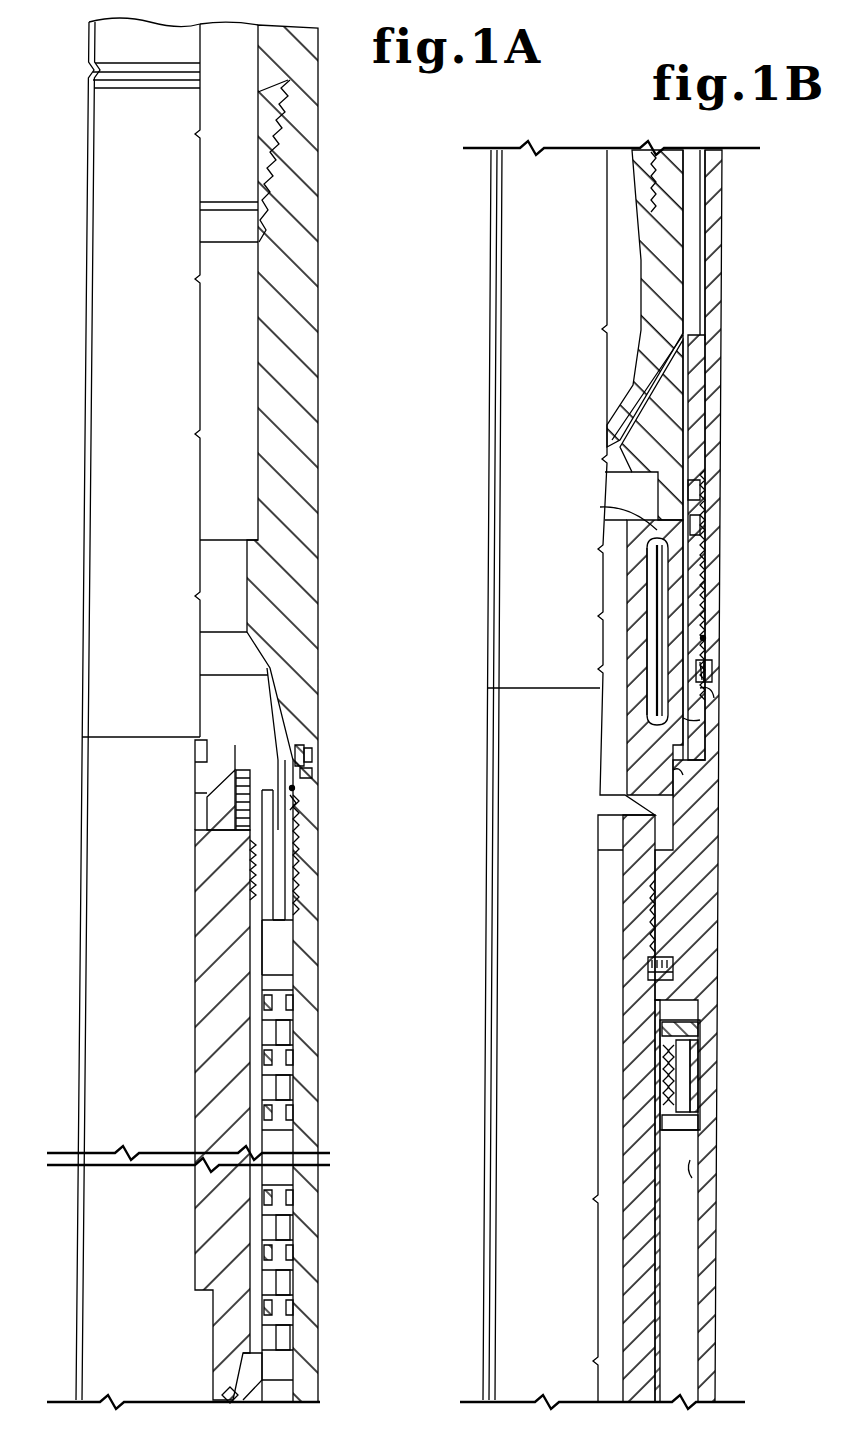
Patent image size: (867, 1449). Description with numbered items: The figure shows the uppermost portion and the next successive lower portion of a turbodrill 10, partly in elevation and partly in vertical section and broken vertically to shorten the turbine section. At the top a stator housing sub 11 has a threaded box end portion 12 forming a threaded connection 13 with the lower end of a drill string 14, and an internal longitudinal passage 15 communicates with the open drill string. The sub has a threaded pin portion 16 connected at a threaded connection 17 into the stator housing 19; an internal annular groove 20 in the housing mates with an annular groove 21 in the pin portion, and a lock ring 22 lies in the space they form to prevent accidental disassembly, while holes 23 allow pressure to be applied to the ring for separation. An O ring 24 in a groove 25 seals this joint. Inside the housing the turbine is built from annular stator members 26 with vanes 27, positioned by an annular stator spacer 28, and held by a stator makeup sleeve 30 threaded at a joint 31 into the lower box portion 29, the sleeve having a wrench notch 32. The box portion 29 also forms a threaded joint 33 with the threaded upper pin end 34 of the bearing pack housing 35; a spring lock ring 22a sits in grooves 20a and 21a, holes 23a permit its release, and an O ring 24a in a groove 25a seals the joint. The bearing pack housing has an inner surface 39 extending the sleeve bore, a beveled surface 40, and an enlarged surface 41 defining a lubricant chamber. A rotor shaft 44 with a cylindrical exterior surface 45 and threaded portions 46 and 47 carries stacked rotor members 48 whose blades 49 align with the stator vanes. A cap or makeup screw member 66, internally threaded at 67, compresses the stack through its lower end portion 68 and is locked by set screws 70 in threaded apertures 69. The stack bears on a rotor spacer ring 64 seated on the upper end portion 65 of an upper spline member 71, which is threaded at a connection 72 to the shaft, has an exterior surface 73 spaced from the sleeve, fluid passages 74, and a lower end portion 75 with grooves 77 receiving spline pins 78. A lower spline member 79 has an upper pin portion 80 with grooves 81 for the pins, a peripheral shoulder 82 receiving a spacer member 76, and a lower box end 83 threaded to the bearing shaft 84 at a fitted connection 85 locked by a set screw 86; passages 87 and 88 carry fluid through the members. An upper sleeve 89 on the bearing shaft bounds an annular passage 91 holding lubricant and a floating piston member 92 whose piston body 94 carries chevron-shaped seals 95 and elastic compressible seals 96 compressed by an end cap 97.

In FIG. 1A, the turbodrill 10 is at (70, 615).
In FIG. 1A, the stator housing sub 11 is at (105, 353).
In FIG. 1A, the threaded box end portion 12 is at (290, 106).
In FIG. 1A, the threaded connection 13 is at (280, 158).
In FIG. 1A, the drill string 14 is at (100, 40).
In FIG. 1A, the internal longitudinal passage 15 is at (258, 400).
In FIG. 1A, the threaded pin portion 16 is at (285, 848).
In FIG. 1A, the threaded connection 17 is at (300, 868).
In FIG. 1A, the stator housing 19 is at (304, 952).
In FIG. 1B, the stator housing 19 is at (710, 246).
In FIG. 1A, the internal annular groove 20 is at (312, 773).
In FIG. 1A, the annular groove 21 is at (264, 770).
In FIG. 1A, the lock ring 22 is at (300, 745).
In FIG. 1A, the holes 23 is at (312, 752).
In FIG. 1A, the O ring 24 is at (295, 788).
In FIG. 1A, the groove 25 is at (292, 806).
In FIG. 1A, the stator members 26 is at (290, 1036).
In FIG. 1A, the vanes or blades 27 is at (280, 1013).
In FIG. 1A, the annular stator spacer 28 is at (292, 978).
In FIG. 1B, the box portion 29 is at (720, 530).
In FIG. 1A, the stator makeup sleeve 30 is at (290, 1386).
In FIG. 1B, the stator makeup sleeve 30 is at (703, 322).
In FIG. 1B, the threaded joint 31 is at (710, 388).
In FIG. 1B, the notch 32 is at (700, 488).
In FIG. 1B, the threaded joint 33 is at (718, 550).
In FIG. 1B, the threaded upper pin end 34 is at (698, 522).
In FIG. 1B, the bearing pack housing 35 is at (706, 860).
In FIG. 1B, the inner surface 39 is at (684, 777).
In FIG. 1B, the beveled surface 40 is at (692, 998).
In FIG. 1B, the surface 41 is at (692, 1170).
In FIG. 1A, the rotor shaft 44 is at (210, 1034).
In FIG. 1A, the cylindrical exterior surface 45 is at (262, 1052).
In FIG. 1A, the threaded portion 46 is at (255, 886).
In FIG. 1A, the threaded portion 47 is at (224, 1394).
In FIG. 1B, the threaded portion 47 is at (646, 186).
In FIG. 1A, the rotor members 48 is at (262, 1005).
In FIG. 1A, the blades or vanes 49 is at (282, 1050).
In FIG. 1A, the rotor spacer ring 64 is at (252, 1340).
In FIG. 1A, the upper end portion 65 is at (250, 1352).
In FIG. 1A, the cap or makeup screw member 66 is at (235, 745).
In FIG. 1A, the internal thread 67 is at (240, 868).
In FIG. 1A, the lower end portion 68 is at (255, 982).
In FIG. 1A, the threaded apertures 69 is at (236, 735).
In FIG. 1A, the set screws 70 is at (215, 785).
In FIG. 1A, the upper spline member 71 is at (262, 1376).
In FIG. 1B, the threaded connection 72 is at (652, 172).
In FIG. 1B, the exterior surface 73 is at (703, 214).
In FIG. 1B, the passages 74 is at (636, 425).
In FIG. 1B, the lower end portion 75 is at (688, 655).
In FIG. 1B, the spacer member 76 is at (690, 722).
In FIG. 1B, the grooves 77 is at (600, 508).
In FIG. 1B, the spline pins 78 is at (655, 577).
In FIG. 1B, the lower spline member 79 is at (640, 738).
In FIG. 1B, the upper pin portion 80 is at (632, 605).
In FIG. 1B, the grooves 81 is at (650, 560).
In FIG. 1B, the peripheral shoulder 82 is at (686, 748).
In FIG. 1B, the lower or box end 83 is at (668, 896).
In FIG. 1B, the bearing shaft 84 is at (640, 1296).
In FIG. 1B, the fitted connection 85 is at (650, 914).
In FIG. 1B, the set screw 86 is at (674, 966).
In FIG. 1B, the interior longitudinal passage 87 is at (626, 630).
In FIG. 1B, the interior longitudinal passage 88 is at (620, 1088).
In FIG. 1B, the upper sleeve 89 is at (640, 1262).
In FIG. 1B, the annular passage 91 is at (684, 1197).
In FIG. 1B, the floating piston member 92 is at (694, 1080).
In FIG. 1B, the piston body 94 is at (692, 1126).
In FIG. 1B, the chevron-shaped seals 95 is at (665, 1060).
In FIG. 1B, the elastic compressible seals 96 is at (690, 1052).
In FIG. 1B, the end cap 97 is at (686, 1034).
In FIG. 1B, the annular groove 20a is at (722, 648).
In FIG. 1B, the annular groove 21a is at (706, 700).
In FIG. 1B, the spring lock ring 22a is at (712, 680).
In FIG. 1B, the holes 23a is at (708, 668).
In FIG. 1B, the O ring 24a is at (708, 636).
In FIG. 1B, the groove 25a is at (706, 612).